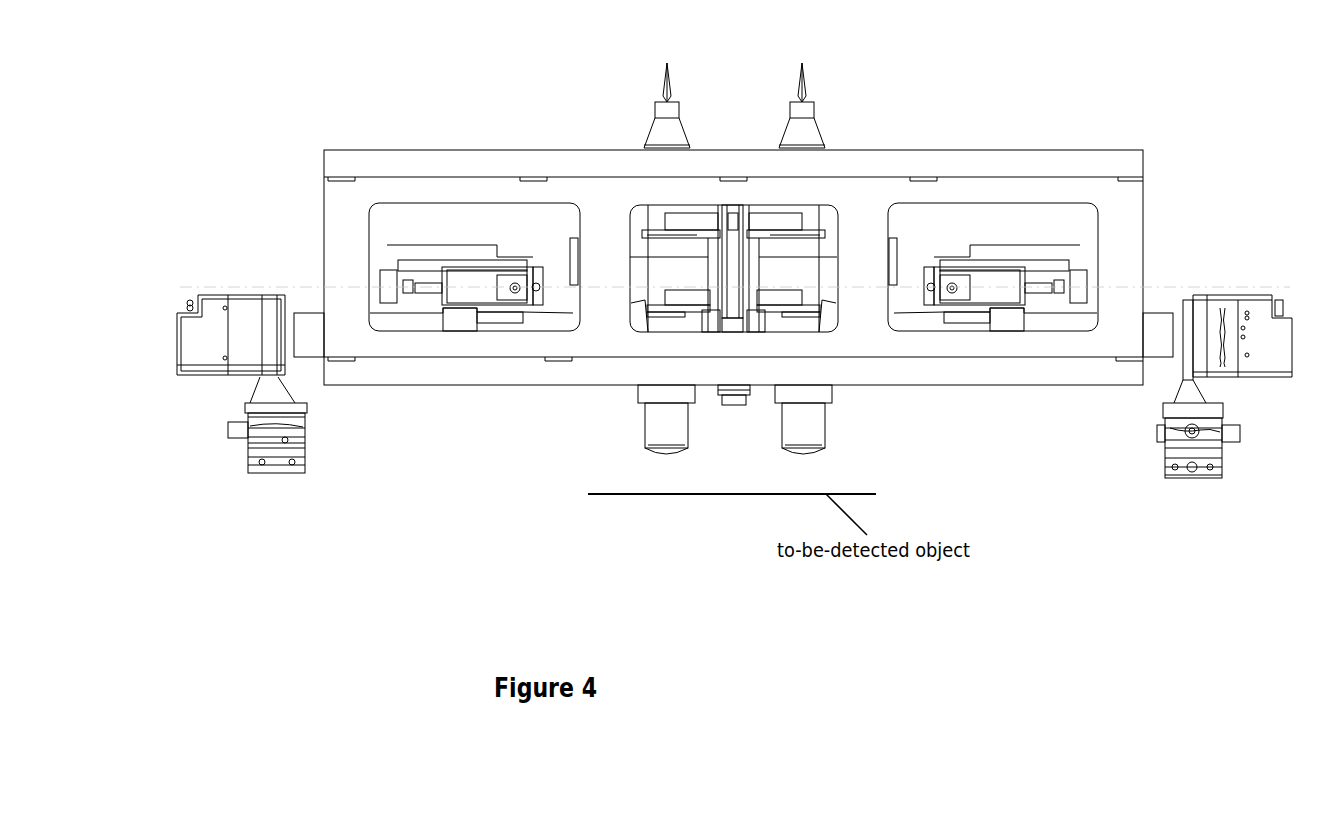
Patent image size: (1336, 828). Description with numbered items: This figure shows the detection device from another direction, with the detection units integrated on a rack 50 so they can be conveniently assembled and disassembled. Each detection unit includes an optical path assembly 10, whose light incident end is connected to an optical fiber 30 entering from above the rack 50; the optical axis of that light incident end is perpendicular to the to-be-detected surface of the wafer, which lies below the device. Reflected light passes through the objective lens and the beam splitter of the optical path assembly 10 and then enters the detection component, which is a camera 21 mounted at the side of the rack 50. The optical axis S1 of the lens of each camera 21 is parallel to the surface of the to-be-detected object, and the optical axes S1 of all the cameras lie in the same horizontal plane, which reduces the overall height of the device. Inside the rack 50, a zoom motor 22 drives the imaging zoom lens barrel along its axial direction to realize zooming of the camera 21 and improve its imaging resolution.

The optical path assembly 10 is at (657, 427).
The camera 21 is at (1262, 363).
The zoom motor 22 is at (997, 290).
The optical fiber 30 is at (804, 82).
The rack 50 is at (1016, 163).
The optical axis S1 is at (1172, 282).